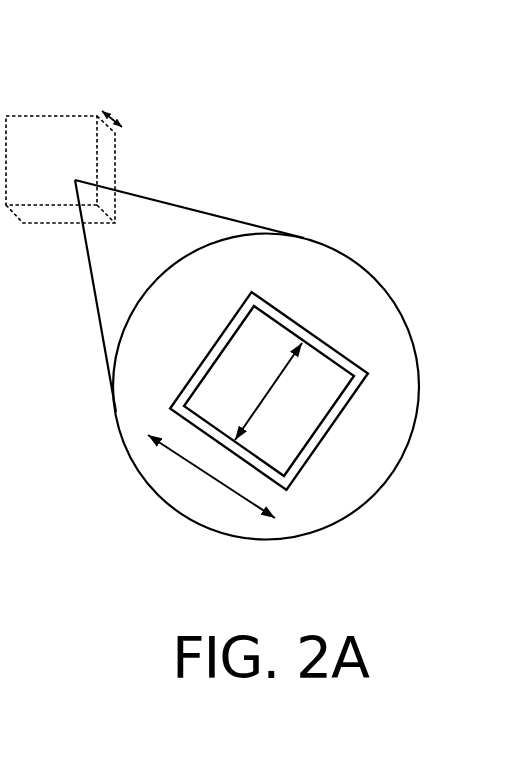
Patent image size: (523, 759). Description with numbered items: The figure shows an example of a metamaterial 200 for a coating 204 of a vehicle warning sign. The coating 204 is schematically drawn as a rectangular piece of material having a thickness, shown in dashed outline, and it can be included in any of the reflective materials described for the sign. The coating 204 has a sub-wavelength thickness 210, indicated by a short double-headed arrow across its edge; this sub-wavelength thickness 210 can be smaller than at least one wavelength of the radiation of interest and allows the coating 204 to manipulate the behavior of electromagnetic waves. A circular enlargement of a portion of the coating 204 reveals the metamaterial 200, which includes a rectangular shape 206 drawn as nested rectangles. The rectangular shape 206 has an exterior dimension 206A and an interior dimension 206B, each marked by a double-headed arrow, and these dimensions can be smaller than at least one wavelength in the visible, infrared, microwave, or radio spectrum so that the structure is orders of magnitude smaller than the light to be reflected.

The coating 204 is at (60, 116).
The sub-wavelength thickness 210 is at (112, 119).
The metamaterial 200 is at (313, 280).
The rectangular shape 206 is at (343, 348).
The exterior dimension 206A is at (198, 472).
The interior dimension 206B is at (262, 402).